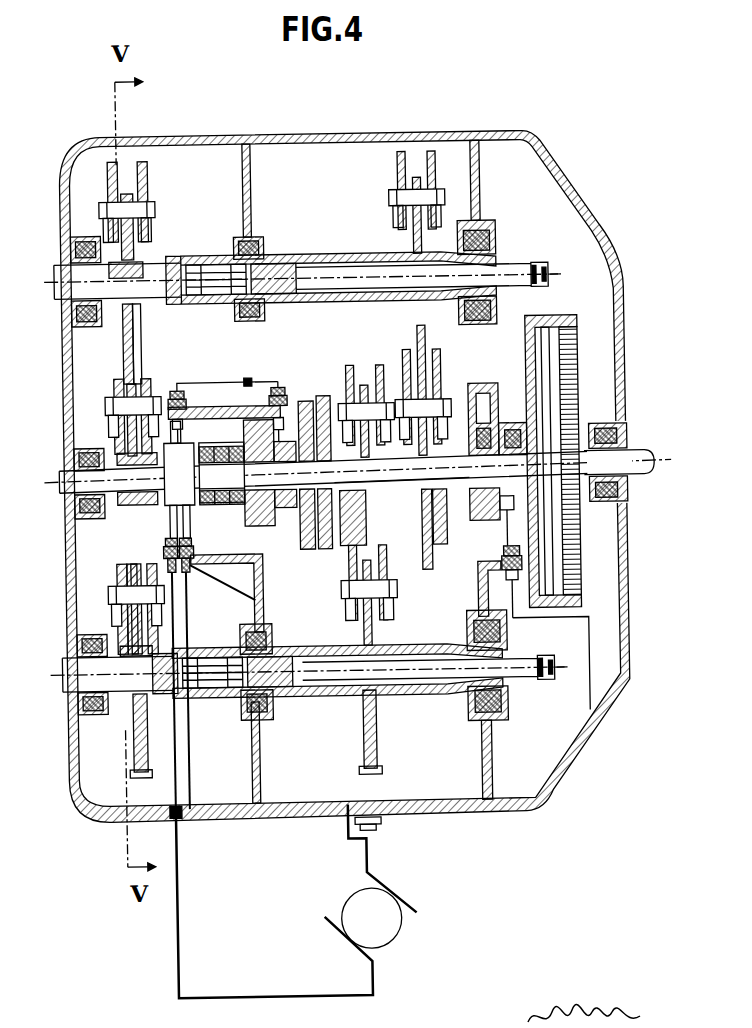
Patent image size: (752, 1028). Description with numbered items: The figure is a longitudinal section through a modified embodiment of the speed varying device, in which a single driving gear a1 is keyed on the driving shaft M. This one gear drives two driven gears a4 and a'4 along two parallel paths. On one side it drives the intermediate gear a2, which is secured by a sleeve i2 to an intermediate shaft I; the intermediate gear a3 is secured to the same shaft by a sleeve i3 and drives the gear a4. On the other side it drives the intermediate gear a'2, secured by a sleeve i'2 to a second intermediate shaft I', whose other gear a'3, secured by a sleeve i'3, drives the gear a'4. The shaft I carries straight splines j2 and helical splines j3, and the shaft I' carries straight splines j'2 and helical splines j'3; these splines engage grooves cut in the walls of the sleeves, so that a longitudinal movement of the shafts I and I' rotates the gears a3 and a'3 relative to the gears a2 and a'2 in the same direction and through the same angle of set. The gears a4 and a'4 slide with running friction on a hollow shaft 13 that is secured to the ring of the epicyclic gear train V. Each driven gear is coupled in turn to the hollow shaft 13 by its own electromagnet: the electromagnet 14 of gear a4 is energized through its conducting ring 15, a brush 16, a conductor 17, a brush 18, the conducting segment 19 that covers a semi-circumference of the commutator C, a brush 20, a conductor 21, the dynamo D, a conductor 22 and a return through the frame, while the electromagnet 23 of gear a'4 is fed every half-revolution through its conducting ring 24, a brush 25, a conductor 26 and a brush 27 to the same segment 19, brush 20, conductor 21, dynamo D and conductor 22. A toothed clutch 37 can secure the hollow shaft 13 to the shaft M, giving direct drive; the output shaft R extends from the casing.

The conductor 17 is at (588, 680).
The sleeve i2 is at (68, 267).
The straight splines j2 is at (228, 259).
The helical splines j3 is at (289, 257).
The sleeve i3 is at (341, 255).
The intermediate shaft I is at (530, 246).
The intermediate gear a2 is at (138, 186).
The intermediate gear a3 is at (424, 186).
The driving shaft M is at (71, 470).
The output shaft R is at (640, 453).
The commutator C is at (135, 522).
The driving gear a1 is at (120, 518).
The intermediate gear a'2 is at (97, 672).
The brush 18 is at (187, 517).
The conducting segment 19 is at (171, 507).
The brush 20 is at (184, 512).
The brush 27 is at (178, 442).
The toothed clutch 37 is at (232, 507).
The electromagnet 23 is at (307, 402).
The hollow shaft 13 is at (395, 481).
The driven gear a'4 is at (367, 431).
The driven gear a4 is at (432, 397).
The electromagnet 14 is at (492, 407).
The conducting ring 15 is at (507, 426).
The epicyclic gear train V is at (569, 323).
The brush 16 is at (505, 502).
The conductor 26 is at (191, 377).
The brush 25 is at (274, 395).
The conducting ring 24 is at (286, 394).
The sleeve i'2 is at (291, 681).
The straight splines j'2 is at (213, 709).
The helical splines j'3 is at (285, 709).
The sleeve i'3 is at (434, 709).
The second intermediate shaft I' is at (535, 705).
The intermediate gear a'3 is at (383, 670).
The conductor 21 is at (172, 616).
The conductor 22 is at (363, 859).
The dynamo D is at (373, 918).